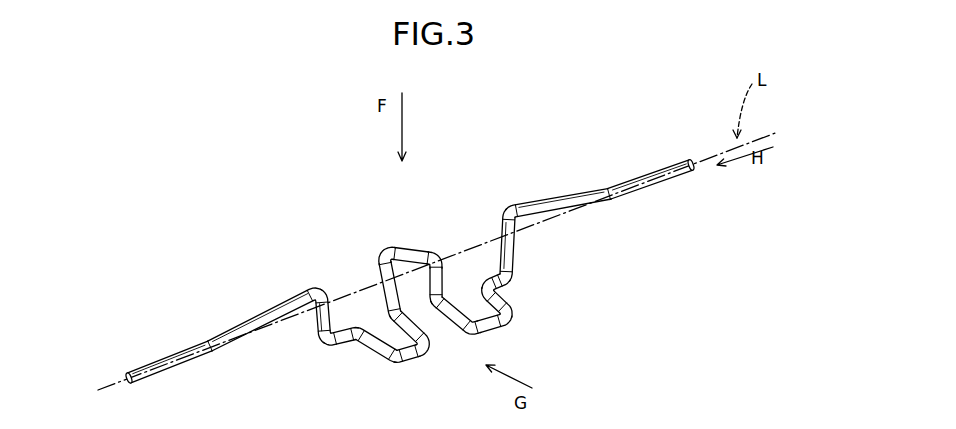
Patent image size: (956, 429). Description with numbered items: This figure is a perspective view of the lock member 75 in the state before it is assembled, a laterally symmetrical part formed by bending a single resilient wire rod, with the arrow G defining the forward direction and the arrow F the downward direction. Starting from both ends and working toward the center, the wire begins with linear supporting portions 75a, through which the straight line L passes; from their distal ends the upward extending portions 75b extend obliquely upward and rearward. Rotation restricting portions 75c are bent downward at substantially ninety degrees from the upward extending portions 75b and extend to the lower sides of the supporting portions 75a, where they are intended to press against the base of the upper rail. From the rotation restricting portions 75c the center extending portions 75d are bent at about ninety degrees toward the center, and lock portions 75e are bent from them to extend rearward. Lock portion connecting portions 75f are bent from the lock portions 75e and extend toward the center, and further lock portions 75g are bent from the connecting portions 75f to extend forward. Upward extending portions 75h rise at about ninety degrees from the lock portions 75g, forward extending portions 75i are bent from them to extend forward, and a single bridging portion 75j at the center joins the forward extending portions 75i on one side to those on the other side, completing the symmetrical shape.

The lock member 75 is at (564, 171).
The linear supporting portions 75a is at (173, 356).
The upward extending portions 75b is at (262, 314).
The rotation restricting portions 75c is at (318, 320).
The center extending portions 75d is at (345, 343).
The lock portions 75e is at (377, 352).
The lock portion connecting portions 75f is at (420, 362).
The lock portions 75g is at (431, 350).
The upward extending portions 75h is at (384, 293).
The forward extending portions 75i is at (380, 251).
The bridging portion 75j is at (400, 248).